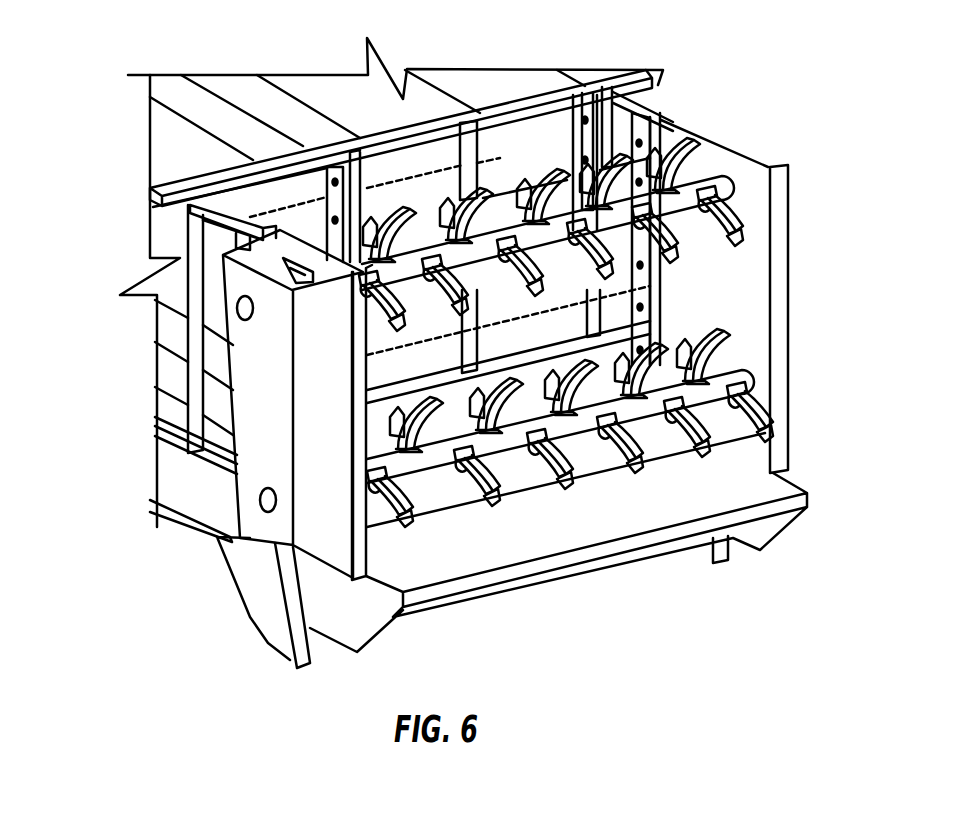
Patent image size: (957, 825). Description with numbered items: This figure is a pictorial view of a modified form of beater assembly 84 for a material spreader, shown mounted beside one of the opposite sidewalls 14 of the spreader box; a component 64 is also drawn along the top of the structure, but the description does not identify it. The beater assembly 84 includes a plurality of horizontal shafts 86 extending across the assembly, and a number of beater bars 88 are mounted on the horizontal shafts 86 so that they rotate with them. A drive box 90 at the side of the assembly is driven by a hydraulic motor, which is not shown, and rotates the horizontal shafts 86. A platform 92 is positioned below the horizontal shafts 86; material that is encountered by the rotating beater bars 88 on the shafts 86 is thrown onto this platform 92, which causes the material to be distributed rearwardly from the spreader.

The sidewall 14 is at (478, 90).
The rail 64 is at (624, 78).
The beater assembly 84 is at (713, 141).
The horizontal shaft 86 is at (720, 178).
The beater bar 88 is at (750, 237).
The drive box 90 is at (265, 472).
The platform 92 is at (562, 540).